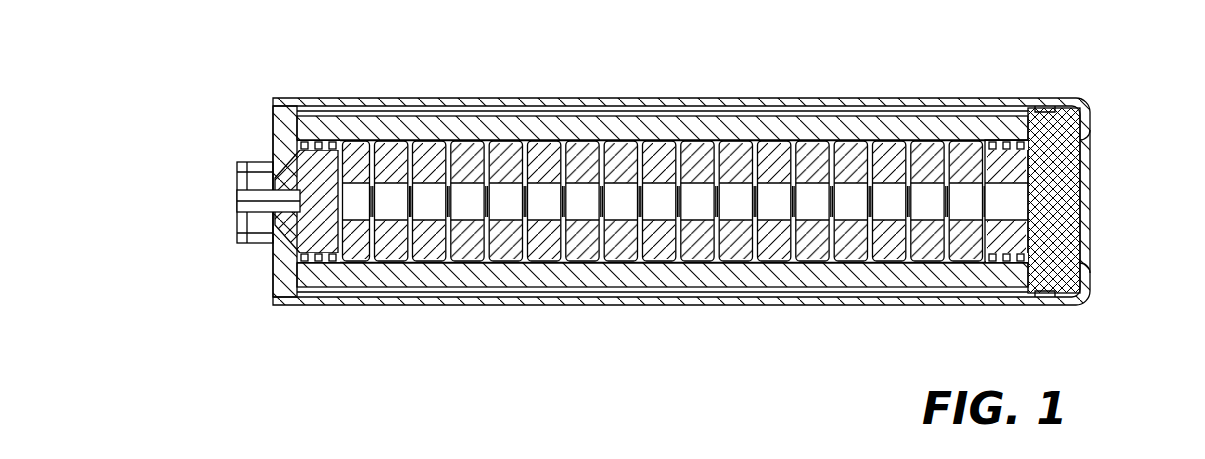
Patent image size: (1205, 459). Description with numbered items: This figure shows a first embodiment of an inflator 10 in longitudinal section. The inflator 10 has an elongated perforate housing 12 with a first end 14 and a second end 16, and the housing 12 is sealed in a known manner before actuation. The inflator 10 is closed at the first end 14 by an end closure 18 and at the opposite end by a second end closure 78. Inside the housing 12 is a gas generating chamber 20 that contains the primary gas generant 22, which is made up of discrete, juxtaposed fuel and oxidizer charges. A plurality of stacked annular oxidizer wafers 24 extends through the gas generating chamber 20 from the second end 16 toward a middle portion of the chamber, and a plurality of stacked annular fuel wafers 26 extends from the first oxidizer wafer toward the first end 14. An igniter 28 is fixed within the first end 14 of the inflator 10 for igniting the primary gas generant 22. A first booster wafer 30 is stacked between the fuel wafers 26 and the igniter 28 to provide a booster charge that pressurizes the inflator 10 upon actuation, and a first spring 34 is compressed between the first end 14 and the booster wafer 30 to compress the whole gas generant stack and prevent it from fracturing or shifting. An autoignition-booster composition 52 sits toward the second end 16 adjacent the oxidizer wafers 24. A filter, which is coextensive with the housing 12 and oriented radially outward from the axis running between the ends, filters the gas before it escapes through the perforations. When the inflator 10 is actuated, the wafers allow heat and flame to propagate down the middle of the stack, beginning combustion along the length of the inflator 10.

The inflator 10 is at (640, 189).
The perforate housing 12 is at (402, 95).
The first end 14 is at (240, 166).
The second end 16 is at (1097, 122).
The end closure 18 is at (268, 263).
The gas generating chamber 20 is at (656, 136).
The primary gas generant 22 is at (701, 193).
The oxidizer wafers 24 is at (774, 204).
The fuel wafers 26 is at (560, 268).
The igniter 28 is at (238, 212).
The first booster wafer 30 is at (358, 250).
The first spring 34 is at (312, 258).
The AIB wafer 52 is at (967, 158).
The second end closure 78 is at (1067, 205).